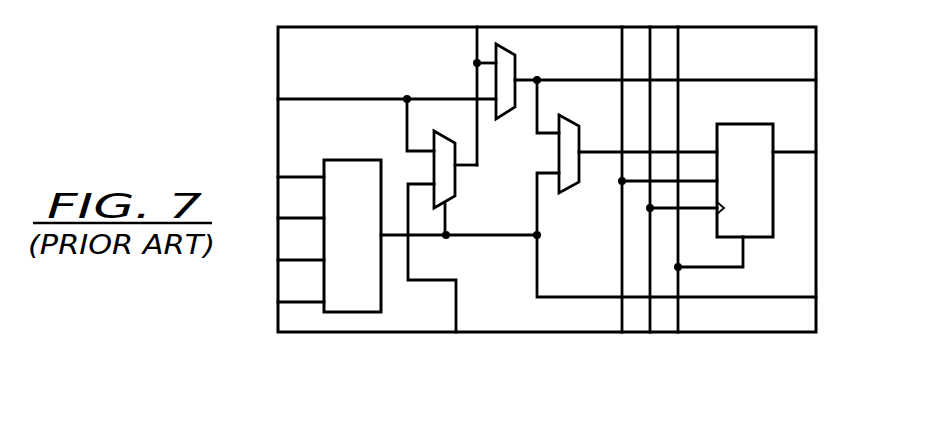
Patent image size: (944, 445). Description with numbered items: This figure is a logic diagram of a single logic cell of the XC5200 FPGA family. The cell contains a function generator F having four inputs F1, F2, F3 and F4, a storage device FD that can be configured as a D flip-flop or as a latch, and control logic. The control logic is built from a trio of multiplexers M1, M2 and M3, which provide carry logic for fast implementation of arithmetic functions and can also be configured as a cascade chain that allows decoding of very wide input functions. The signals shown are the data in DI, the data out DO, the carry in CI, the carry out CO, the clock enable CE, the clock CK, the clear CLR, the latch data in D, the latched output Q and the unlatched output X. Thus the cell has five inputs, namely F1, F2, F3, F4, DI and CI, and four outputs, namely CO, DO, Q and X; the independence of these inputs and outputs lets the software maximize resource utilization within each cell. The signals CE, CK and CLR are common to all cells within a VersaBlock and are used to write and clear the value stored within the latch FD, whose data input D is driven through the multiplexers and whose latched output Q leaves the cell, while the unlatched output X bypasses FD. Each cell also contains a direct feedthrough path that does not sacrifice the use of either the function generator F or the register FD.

The multiplexer M1 is at (447, 178).
The multiplexer M2 is at (508, 68).
The multiplexer M3 is at (559, 157).
The function generator F is at (430, 236).
The storage device FD is at (709, 180).
The function generator input F1 is at (301, 292).
The function generator input F2 is at (301, 250).
The function generator input F3 is at (301, 208).
The function generator input F4 is at (301, 167).
The data in DI is at (387, 109).
The data out DO is at (665, 93).
The carry out CO is at (463, 96).
The carry in CI is at (432, 259).
The clock enable CE is at (674, 253).
The clock CK is at (650, 196).
The clear CLR is at (710, 285).
The latch data in D is at (648, 138).
The latched output Q is at (794, 138).
The unlatched output X is at (795, 283).